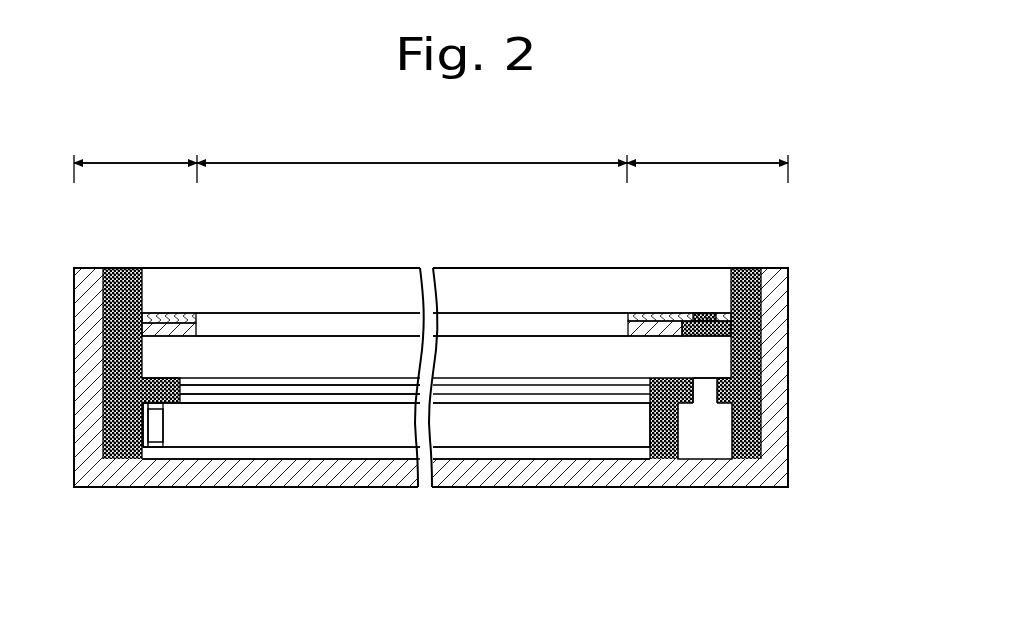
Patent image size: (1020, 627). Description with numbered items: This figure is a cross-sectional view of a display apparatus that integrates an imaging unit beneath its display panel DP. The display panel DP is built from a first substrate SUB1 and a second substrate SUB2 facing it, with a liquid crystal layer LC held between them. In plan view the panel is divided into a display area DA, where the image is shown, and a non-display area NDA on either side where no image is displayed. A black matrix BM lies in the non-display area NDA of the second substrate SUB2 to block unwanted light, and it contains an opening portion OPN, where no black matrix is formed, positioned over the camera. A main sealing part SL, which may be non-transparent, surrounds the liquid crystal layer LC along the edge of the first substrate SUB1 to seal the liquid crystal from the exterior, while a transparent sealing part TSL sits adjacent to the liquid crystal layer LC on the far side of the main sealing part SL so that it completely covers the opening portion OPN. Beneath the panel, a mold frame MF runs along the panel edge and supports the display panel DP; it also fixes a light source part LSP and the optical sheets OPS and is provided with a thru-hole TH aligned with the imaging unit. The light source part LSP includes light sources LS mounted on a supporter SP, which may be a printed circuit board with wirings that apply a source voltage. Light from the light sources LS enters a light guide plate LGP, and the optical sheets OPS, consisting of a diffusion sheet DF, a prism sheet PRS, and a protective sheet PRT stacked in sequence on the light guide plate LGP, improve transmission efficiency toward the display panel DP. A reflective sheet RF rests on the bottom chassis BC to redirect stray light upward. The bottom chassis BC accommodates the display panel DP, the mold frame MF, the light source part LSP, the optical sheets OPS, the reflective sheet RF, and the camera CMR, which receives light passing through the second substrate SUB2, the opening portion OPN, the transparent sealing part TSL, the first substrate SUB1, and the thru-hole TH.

The non-display area NDA is at (431, 160).
The display area DA is at (412, 150).
The display panel DP is at (176, 268).
The second substrate SUB2 is at (247, 278).
The liquid crystal layer LC is at (299, 318).
The first substrate SUB1 is at (353, 344).
The black matrix BM is at (647, 312).
The main sealing part SL is at (662, 313).
The opening portion OPN is at (702, 312).
The transparent sealing part TSL is at (720, 329).
The mold frame MF is at (750, 358).
The thru-hole TH is at (720, 390).
The bottom chassis BC is at (778, 442).
The supporter SP is at (145, 440).
The light sources LS is at (155, 432).
The light source part LSP is at (192, 549).
The diffusion sheet DF is at (246, 398).
The prism sheet PRS is at (298, 391).
The protective sheet PRT is at (350, 382).
The optical sheets OPS is at (381, 549).
The reflective sheet RF is at (497, 457).
The light guide plate LGP is at (558, 432).
The camera CMR is at (703, 448).